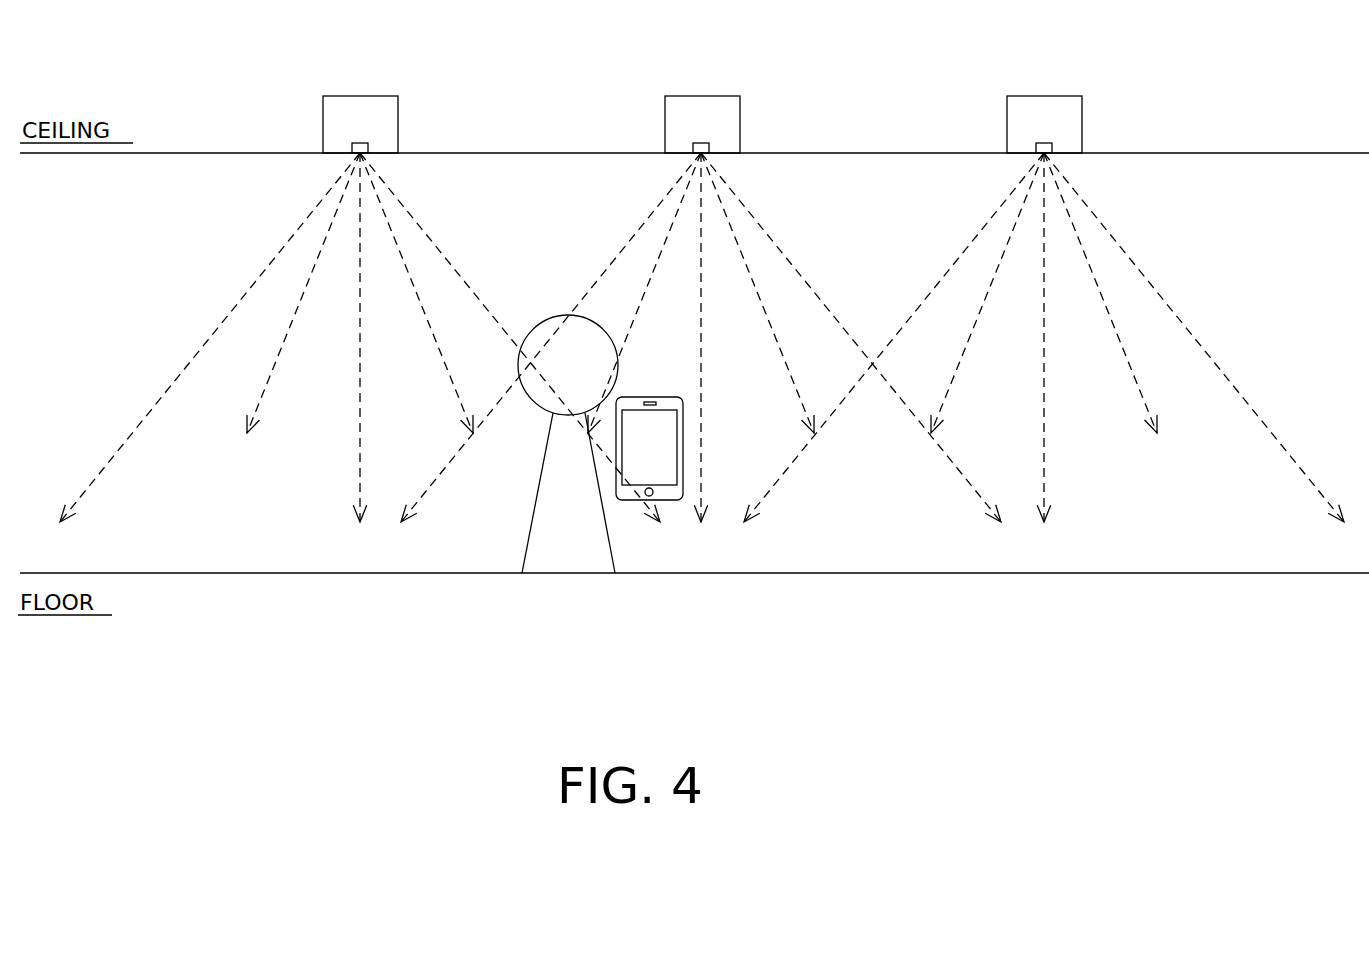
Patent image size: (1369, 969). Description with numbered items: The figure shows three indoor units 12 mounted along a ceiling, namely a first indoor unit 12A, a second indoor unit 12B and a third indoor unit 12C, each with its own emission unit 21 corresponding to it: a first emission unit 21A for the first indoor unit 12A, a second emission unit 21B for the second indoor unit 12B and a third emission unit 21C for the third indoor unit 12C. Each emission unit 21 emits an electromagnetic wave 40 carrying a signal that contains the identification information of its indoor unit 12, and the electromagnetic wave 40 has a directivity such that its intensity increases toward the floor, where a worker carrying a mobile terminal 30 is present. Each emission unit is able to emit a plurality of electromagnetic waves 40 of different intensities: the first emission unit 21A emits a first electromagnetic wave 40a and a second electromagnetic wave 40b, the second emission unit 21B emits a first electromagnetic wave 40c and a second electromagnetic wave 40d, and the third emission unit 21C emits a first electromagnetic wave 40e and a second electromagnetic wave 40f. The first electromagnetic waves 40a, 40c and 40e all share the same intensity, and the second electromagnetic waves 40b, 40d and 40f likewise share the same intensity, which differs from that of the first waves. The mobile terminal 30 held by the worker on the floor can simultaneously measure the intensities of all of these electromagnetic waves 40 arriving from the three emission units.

The indoor unit 12 is at (702, 272).
The first indoor unit 12A is at (398, 96).
The second indoor unit 12B is at (740, 96).
The third indoor unit 12C is at (1082, 96).
The emission unit 21 is at (702, 272).
The first emission unit 21A is at (368, 143).
The second emission unit 21B is at (709, 143).
The third emission unit 21C is at (1052, 143).
The electromagnetic wave 40 is at (702, 272).
The first electromagnetic wave 40a is at (407, 268).
The second electromagnetic wave 40b is at (460, 283).
The first electromagnetic wave 40c is at (748, 268).
The second electromagnetic wave 40d is at (801, 283).
The first electromagnetic wave 40e is at (1091, 268).
The second electromagnetic wave 40f is at (1144, 283).
The mobile terminal 30 is at (655, 502).